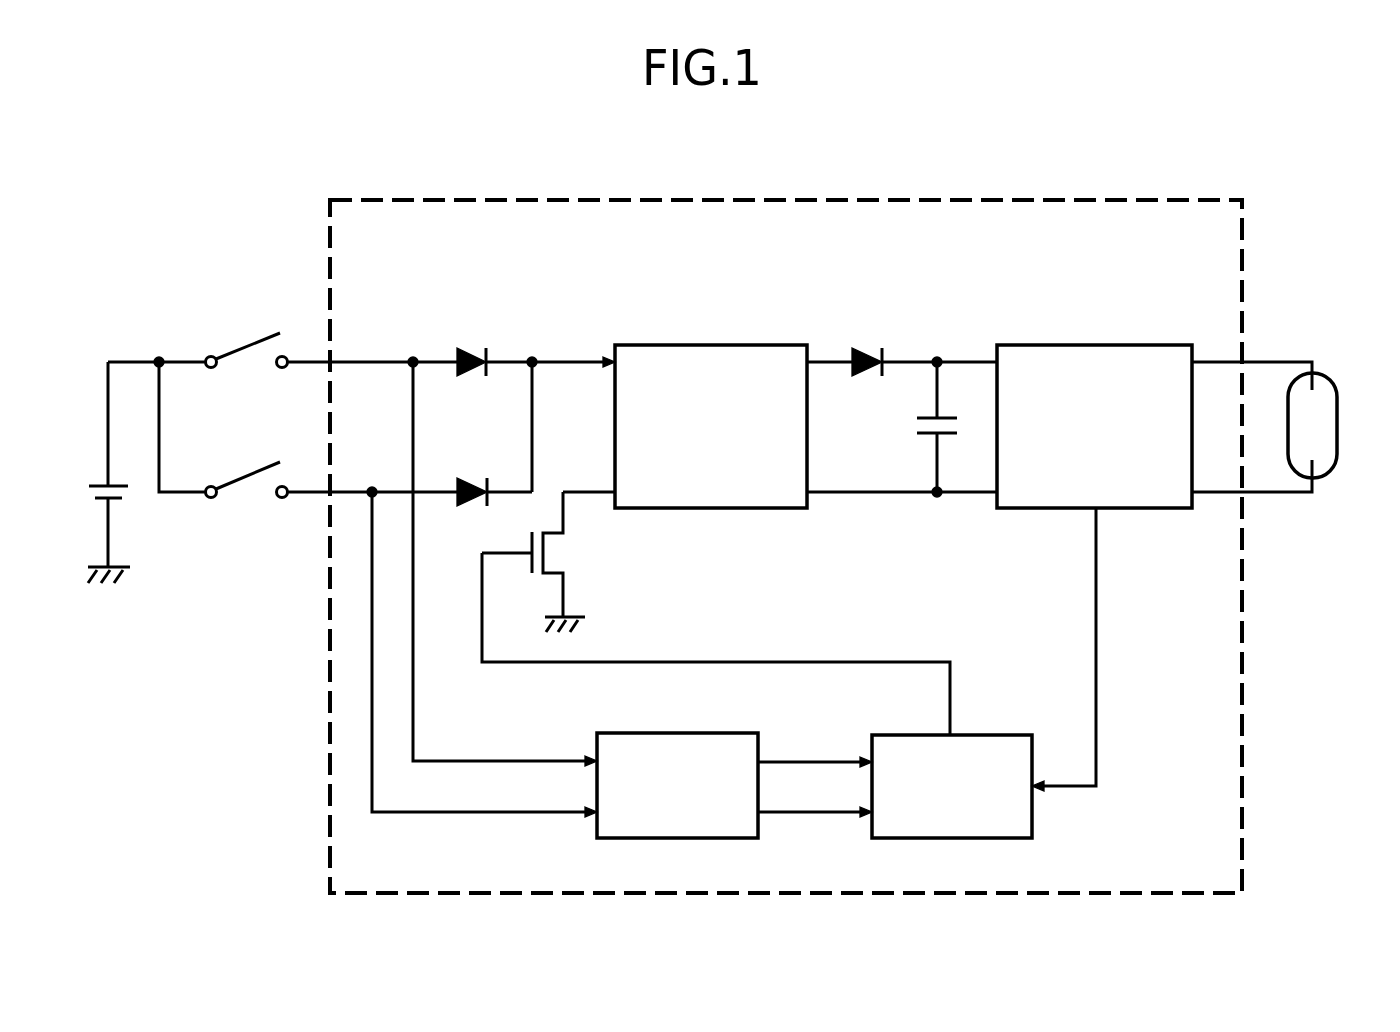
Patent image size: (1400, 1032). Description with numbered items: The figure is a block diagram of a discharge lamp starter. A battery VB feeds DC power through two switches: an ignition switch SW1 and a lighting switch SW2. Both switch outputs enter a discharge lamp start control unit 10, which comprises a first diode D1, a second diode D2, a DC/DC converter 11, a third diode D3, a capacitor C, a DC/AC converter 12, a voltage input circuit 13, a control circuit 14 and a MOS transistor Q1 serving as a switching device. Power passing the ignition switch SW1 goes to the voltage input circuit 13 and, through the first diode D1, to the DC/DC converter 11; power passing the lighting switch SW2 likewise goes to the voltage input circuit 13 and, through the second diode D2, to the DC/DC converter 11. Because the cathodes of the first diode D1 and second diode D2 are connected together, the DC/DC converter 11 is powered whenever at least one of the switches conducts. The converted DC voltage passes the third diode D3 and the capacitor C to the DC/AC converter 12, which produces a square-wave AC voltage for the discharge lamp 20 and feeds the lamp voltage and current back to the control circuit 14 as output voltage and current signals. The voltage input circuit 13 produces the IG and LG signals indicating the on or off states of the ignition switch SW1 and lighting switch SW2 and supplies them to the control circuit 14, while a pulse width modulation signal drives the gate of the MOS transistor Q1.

The discharge lamp start control unit 10 is at (780, 200).
The DC/DC converter 11 is at (708, 345).
The DC/AC converter 12 is at (1092, 344).
The voltage input circuit 13 is at (676, 733).
The control circuit 14 is at (1001, 733).
The discharge lamp 20 is at (1339, 428).
The battery VB is at (86, 472).
The ignition switch SW1 is at (247, 332).
The lighting switch SW2 is at (247, 499).
The first diode D1 is at (471, 344).
The second diode D2 is at (471, 474).
The third diode D3 is at (867, 345).
The capacitor C is at (922, 427).
The MOS transistor Q1 is at (544, 562).